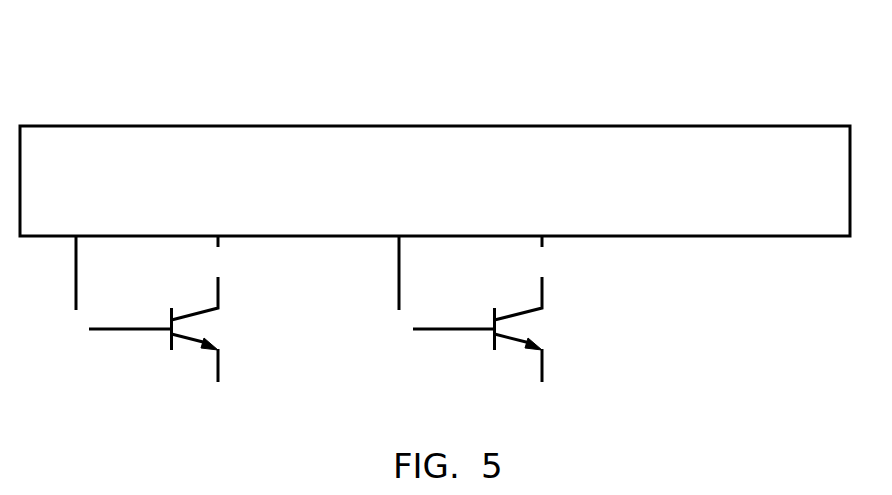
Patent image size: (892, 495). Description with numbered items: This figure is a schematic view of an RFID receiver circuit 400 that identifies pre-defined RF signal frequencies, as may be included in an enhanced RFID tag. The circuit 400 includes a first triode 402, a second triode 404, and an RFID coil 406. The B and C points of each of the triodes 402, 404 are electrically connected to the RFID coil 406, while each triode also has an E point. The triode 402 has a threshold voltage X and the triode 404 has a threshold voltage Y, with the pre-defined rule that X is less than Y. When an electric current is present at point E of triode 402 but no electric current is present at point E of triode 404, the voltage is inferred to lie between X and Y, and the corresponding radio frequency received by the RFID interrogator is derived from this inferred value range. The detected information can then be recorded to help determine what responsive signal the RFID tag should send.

The RFID receiver circuit 400 is at (768, 41).
The triode 402 is at (166, 362).
The triode 404 is at (565, 325).
The RFID coil 406 is at (712, 212).